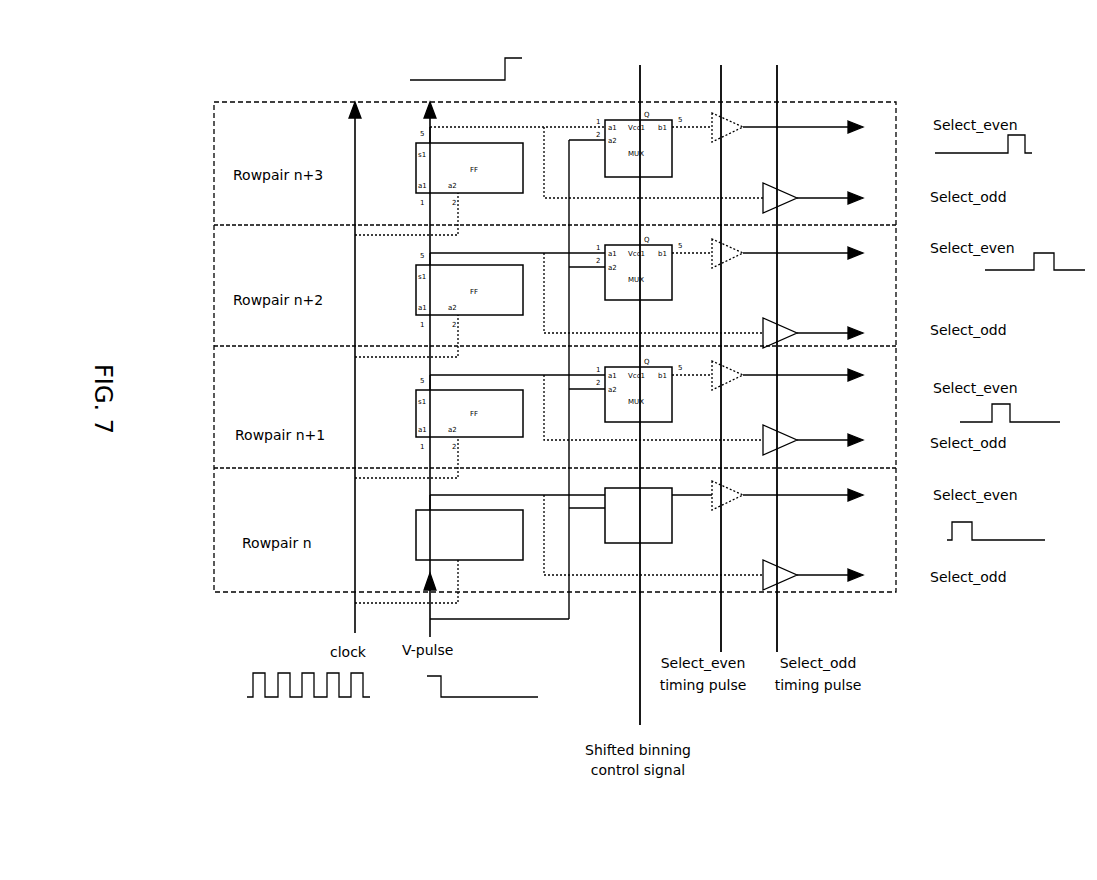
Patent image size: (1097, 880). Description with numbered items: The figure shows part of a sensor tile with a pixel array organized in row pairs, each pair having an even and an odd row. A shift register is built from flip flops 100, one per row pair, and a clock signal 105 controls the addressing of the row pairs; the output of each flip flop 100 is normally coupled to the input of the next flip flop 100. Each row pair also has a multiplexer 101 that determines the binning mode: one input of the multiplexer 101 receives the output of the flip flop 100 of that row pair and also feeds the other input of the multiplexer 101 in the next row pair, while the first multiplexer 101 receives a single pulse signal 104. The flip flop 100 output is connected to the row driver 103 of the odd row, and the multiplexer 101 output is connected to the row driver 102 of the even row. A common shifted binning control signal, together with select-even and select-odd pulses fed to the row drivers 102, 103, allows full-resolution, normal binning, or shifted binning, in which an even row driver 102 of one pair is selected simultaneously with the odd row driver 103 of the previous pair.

The flip flop 100 is at (505, 565).
The multiplexer 101 is at (618, 542).
The row driver of the even row 102 is at (722, 508).
The row driver of the odd row 103 is at (778, 586).
The single pulse signal 104 is at (470, 697).
The clock signal 105 is at (320, 697).